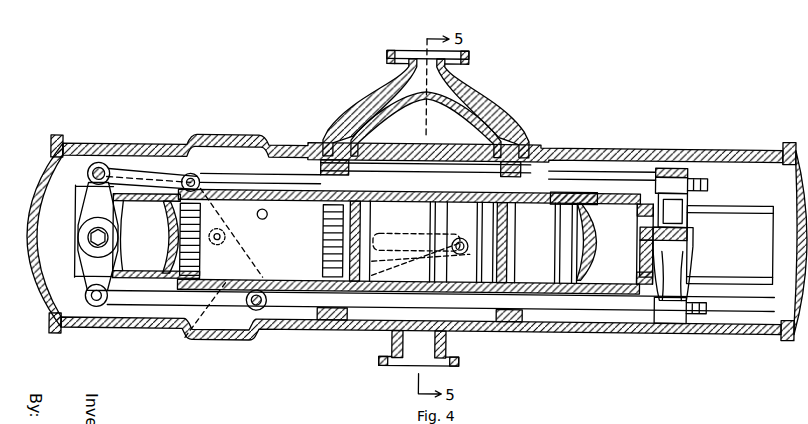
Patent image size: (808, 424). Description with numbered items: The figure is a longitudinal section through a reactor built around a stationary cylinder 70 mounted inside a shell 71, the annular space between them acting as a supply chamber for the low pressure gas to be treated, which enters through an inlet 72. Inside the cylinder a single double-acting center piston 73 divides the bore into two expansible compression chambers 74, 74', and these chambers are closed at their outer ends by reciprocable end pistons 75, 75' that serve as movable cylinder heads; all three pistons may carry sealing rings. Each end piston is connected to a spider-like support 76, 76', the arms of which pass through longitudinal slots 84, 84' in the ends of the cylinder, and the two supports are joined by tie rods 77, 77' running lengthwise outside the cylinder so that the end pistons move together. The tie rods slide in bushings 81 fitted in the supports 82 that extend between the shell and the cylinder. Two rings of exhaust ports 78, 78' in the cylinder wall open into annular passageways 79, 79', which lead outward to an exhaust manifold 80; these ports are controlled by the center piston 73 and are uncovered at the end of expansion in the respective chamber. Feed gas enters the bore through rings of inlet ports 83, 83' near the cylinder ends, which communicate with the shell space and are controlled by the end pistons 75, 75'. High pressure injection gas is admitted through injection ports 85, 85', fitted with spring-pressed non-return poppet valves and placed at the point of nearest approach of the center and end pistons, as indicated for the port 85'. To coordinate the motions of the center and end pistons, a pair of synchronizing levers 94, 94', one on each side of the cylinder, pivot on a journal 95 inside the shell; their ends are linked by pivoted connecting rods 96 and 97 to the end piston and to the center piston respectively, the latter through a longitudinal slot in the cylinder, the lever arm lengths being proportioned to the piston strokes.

The stationary cylinder 70 is at (260, 190).
The shell 71 is at (615, 328).
The inlet 72 is at (417, 347).
The center piston 73 is at (530, 242).
The compression chamber 74 is at (408, 241).
The compression chamber 74' is at (605, 242).
The end piston 75 is at (149, 237).
The end piston 75' is at (646, 200).
The spider-like support 76 is at (83, 295).
The spider-like support 76' is at (691, 246).
The tie rod 77 is at (157, 145).
The tie rod 77' is at (441, 323).
The exhaust ports 78 is at (319, 240).
The exhaust ports 78' is at (516, 244).
The annular passageway 79 is at (331, 241).
The annular passageway 79' is at (498, 242).
The exhaust manifold 80 is at (473, 110).
The bushings 81 is at (495, 163).
The supports 82 is at (547, 145).
The inlet ports 83 is at (201, 239).
The inlet ports 83' is at (651, 200).
The longitudinal slot 84 is at (156, 273).
The longitudinal slot 84' is at (729, 264).
The injection port 85 is at (279, 213).
The injection port 85' is at (552, 243).
The synchronizing lever 94 is at (215, 320).
The synchronizing lever 94' is at (203, 171).
The journal 95 is at (226, 234).
The connecting rod 96 is at (128, 165).
The connecting rod 97 is at (393, 262).